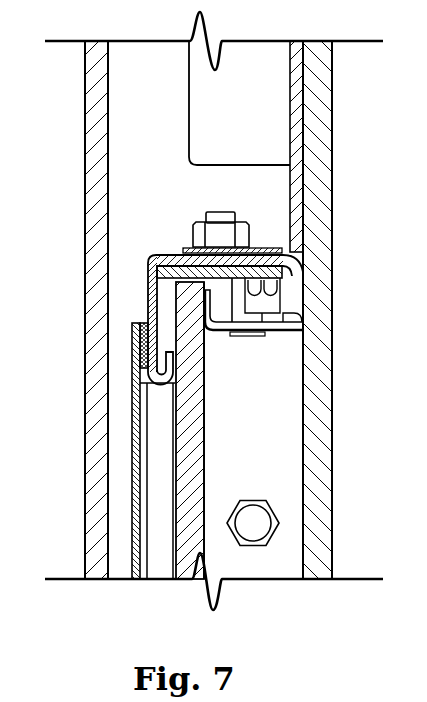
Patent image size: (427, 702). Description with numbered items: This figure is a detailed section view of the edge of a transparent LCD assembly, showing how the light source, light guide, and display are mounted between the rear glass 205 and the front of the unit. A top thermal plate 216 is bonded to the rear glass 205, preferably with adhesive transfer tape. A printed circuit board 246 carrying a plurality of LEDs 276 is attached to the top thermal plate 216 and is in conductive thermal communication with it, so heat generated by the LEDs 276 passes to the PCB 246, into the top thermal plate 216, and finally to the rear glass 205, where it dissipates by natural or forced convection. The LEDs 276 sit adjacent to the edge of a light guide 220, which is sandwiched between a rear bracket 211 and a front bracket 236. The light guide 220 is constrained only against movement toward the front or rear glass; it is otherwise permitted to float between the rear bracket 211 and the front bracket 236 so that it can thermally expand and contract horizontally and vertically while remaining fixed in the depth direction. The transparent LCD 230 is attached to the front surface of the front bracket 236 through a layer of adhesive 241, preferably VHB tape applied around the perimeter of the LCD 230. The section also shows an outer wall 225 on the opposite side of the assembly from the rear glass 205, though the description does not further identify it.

The rear glass 205 is at (320, 145).
The rear bracket 211 is at (300, 323).
The top thermal plate 216 is at (298, 192).
The light guide 220 is at (188, 488).
The left wall 225 is at (100, 142).
The transparent LCD 230 is at (136, 410).
The front bracket 236 is at (150, 318).
The adhesive 241 is at (142, 348).
The printed circuit board 246 is at (280, 272).
The LEDs 276 is at (160, 268).